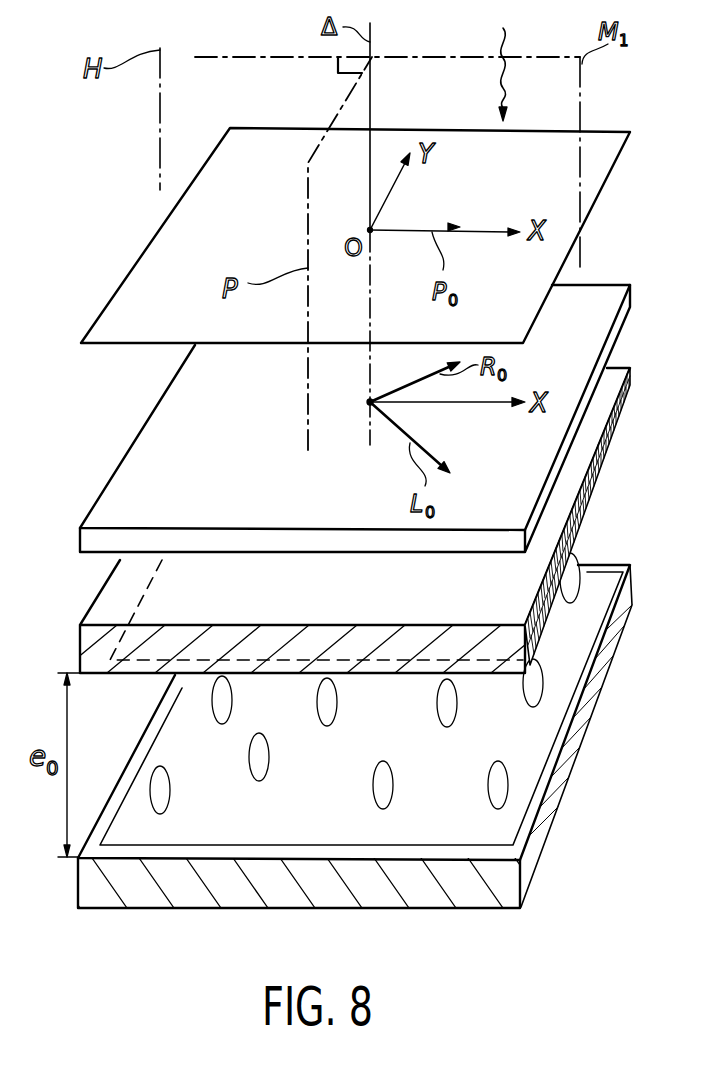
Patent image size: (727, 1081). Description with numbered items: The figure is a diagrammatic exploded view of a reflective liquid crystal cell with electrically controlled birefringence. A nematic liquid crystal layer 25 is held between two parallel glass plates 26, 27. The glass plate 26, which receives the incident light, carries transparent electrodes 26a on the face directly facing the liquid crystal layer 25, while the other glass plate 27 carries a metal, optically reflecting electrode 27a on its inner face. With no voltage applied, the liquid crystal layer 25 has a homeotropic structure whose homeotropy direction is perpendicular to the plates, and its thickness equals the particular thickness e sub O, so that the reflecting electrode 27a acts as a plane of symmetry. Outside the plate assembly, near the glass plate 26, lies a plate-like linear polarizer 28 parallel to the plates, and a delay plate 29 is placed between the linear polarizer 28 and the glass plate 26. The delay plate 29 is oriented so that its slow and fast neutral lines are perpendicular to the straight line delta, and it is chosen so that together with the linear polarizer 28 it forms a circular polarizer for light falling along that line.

The nematic liquid crystal layer 25 is at (362, 618).
The glass plate 26 is at (365, 537).
The transparent electrodes 26a is at (378, 668).
The glass plate 27 is at (357, 730).
The optically reflecting electrode 27a is at (523, 843).
The linear polarizer 28 is at (628, 130).
The delay plate 29 is at (630, 283).